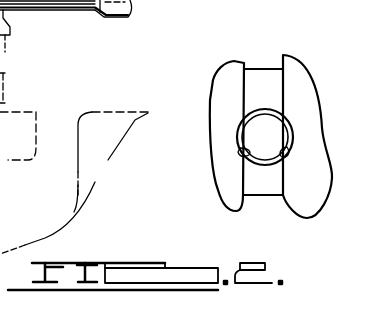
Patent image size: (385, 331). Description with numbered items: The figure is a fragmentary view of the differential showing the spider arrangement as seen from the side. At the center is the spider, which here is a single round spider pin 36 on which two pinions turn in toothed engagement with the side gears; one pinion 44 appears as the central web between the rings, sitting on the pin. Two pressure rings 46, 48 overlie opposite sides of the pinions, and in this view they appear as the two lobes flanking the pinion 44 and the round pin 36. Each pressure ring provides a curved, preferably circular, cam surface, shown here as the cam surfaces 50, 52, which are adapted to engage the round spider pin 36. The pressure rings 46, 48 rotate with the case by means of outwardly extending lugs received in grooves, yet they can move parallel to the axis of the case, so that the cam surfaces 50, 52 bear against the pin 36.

The spider pin 36 is at (257, 132).
The pinion 44 is at (263, 70).
The pressure ring 46 is at (222, 78).
The pressure ring 48 is at (297, 72).
The cam surface 50 is at (250, 150).
The cam surface 52 is at (288, 143).